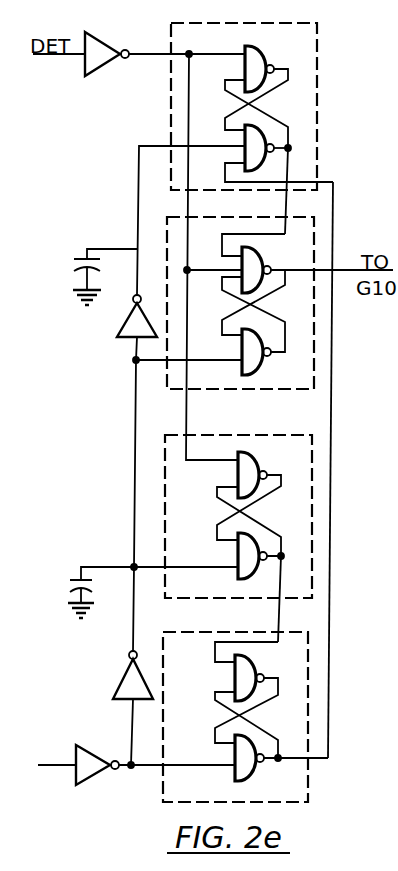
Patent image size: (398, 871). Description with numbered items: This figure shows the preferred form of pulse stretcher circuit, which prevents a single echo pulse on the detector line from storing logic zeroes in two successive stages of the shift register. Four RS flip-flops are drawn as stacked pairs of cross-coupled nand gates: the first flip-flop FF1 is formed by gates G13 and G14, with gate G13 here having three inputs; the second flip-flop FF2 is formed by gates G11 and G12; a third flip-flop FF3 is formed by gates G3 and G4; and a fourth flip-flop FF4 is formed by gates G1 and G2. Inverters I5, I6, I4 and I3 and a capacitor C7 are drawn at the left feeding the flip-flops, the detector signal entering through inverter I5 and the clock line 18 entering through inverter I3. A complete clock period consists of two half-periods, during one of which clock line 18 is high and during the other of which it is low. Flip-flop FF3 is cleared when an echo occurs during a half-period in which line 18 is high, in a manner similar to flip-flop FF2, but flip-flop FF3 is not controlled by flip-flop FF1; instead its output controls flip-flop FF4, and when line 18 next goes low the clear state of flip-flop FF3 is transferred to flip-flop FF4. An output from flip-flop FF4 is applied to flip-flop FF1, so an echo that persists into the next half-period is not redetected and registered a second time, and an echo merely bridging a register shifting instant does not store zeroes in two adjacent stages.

The inverter I5 is at (98, 40).
The inverter I6 is at (123, 325).
The inverter I4 is at (121, 677).
The inverter I3 is at (85, 778).
The clock line 18 is at (55, 759).
The capacitor C7 is at (80, 250).
The first RS flip-flop FF1 is at (221, 23).
The second RS flip-flop FF2 is at (231, 202).
The flip-flop FF3 is at (217, 435).
The fourth flip-flop FF4 is at (245, 704).
The nand gate G14 is at (250, 48).
The nand gate G13 is at (245, 158).
The nand gate G12 is at (254, 251).
The nand gate G11 is at (253, 367).
The nand gate G4 is at (245, 459).
The nand gate G3 is at (241, 577).
The nand gate G2 is at (245, 666).
The nand gate G1 is at (242, 775).